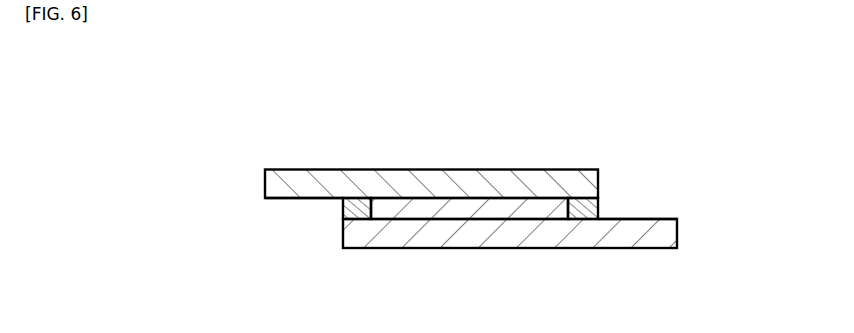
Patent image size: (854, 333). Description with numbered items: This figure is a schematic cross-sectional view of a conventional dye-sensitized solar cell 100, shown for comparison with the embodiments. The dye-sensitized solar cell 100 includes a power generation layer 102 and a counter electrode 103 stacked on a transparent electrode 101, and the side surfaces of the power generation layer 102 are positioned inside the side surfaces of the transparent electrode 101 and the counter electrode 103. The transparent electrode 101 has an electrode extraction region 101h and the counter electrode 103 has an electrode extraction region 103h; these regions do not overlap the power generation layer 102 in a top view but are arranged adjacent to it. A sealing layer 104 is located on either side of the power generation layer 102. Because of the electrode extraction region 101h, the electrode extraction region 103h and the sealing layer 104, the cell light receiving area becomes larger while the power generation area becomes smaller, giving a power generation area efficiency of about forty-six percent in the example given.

The dye-sensitized solar cell 100 is at (128, 81).
The transparent electrode 101 is at (665, 232).
The electrode extraction region 101h is at (673, 218).
The power generation layer 102 is at (561, 210).
The counter electrode 103 is at (561, 172).
The electrode extraction region 103h is at (277, 199).
The sealing layer 104 is at (352, 208).